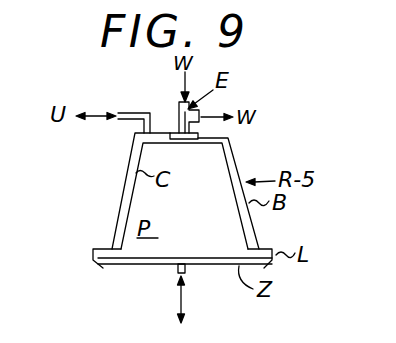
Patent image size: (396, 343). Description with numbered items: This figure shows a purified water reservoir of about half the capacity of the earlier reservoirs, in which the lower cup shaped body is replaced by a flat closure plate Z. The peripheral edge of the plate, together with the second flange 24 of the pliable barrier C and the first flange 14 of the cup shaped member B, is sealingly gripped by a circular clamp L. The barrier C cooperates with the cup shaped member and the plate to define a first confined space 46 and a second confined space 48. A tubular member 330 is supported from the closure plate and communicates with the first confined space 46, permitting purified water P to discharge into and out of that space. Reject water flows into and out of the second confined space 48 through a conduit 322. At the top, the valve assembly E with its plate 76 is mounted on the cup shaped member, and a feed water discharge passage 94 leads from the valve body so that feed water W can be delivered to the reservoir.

The conduit 322 is at (130, 112).
The feed water discharge passage 94 is at (199, 126).
The plate 76 is at (197, 139).
The second confined space 48 is at (237, 160).
The first confined space 46 is at (200, 217).
The first flange 14 is at (106, 249).
The second flange 24 is at (243, 253).
The tubular member 330 is at (176, 270).